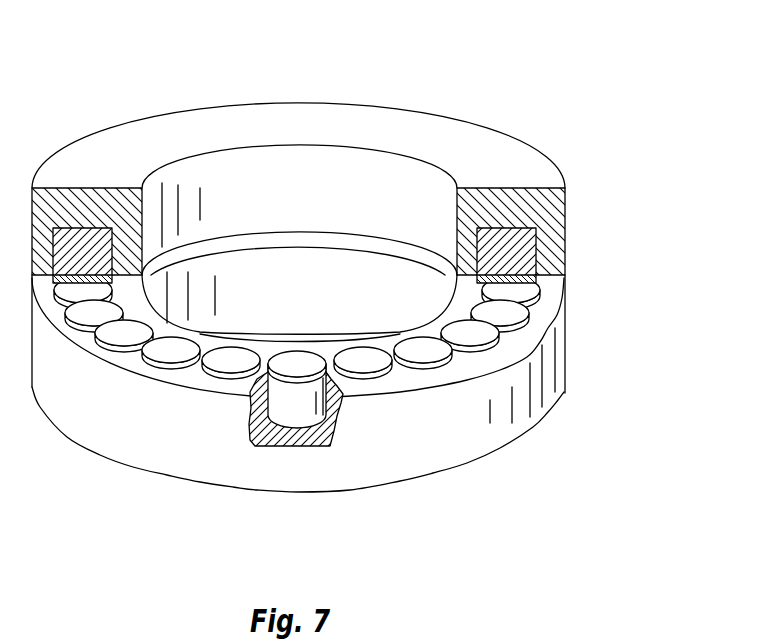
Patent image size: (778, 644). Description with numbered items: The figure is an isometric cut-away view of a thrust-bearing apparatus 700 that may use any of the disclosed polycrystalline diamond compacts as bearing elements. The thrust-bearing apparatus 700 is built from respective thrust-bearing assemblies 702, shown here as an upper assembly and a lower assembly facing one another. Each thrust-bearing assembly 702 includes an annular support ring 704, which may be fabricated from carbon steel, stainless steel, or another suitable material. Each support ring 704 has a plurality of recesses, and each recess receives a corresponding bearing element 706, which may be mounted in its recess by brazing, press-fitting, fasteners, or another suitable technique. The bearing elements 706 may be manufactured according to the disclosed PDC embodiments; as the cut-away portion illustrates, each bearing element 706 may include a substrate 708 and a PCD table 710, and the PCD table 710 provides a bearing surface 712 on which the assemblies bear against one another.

The thrust-bearing apparatus 700 is at (494, 70).
The thrust-bearing assembly 702 is at (585, 250).
The annular support ring 704 is at (545, 213).
The bearing element 706 is at (283, 428).
The substrate 708 is at (297, 420).
The PCD table 710 is at (285, 368).
The bearing surface 712 is at (253, 348).